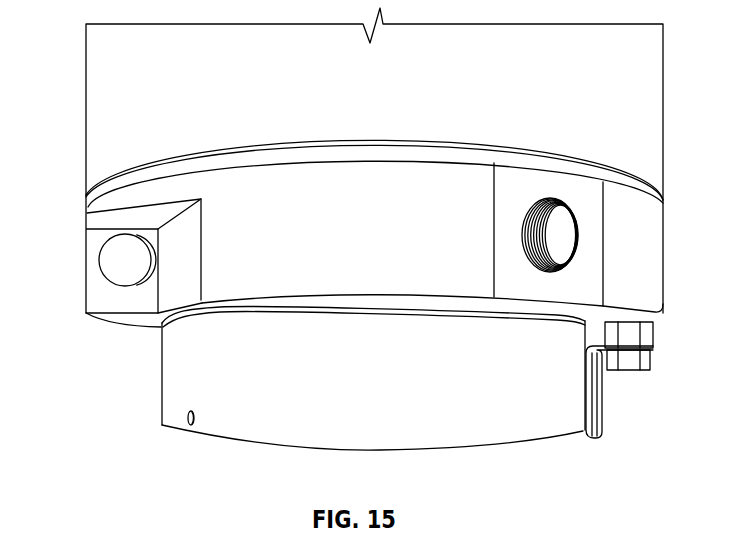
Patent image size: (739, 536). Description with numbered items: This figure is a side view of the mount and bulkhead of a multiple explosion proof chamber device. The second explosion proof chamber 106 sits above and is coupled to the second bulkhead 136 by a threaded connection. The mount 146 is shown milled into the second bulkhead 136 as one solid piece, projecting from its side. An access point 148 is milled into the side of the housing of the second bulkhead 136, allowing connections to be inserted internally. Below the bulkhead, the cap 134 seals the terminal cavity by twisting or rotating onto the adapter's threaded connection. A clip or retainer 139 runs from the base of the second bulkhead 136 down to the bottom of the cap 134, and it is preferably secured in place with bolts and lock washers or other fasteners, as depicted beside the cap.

The second explosion proof chamber 106 is at (93, 125).
The second bulkhead 136 is at (88, 213).
The mount 146 is at (93, 272).
The access point 148 is at (577, 233).
The cap 134 is at (497, 423).
The clip or retainer 139 is at (597, 388).